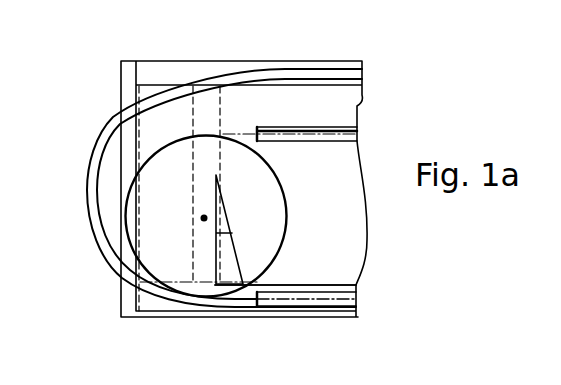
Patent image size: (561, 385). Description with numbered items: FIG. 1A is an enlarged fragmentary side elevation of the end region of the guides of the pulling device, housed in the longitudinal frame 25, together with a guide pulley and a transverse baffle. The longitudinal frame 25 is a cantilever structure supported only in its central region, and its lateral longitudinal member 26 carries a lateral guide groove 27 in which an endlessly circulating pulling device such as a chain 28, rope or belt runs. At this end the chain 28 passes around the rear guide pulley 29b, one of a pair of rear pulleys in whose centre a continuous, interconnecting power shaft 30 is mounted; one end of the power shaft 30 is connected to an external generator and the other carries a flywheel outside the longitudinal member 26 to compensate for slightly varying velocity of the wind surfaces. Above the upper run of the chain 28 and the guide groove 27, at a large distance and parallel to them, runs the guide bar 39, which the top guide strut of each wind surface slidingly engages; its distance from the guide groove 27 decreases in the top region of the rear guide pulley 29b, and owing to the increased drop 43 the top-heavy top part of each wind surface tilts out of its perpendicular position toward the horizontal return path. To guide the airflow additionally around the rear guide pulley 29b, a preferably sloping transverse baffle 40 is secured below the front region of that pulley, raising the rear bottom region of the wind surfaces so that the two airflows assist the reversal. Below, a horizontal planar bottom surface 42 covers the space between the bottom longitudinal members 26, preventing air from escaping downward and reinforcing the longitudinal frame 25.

The longitudinal frame 25 is at (202, 60).
The longitudinal member 26 is at (148, 70).
The guide groove 27 is at (272, 127).
The chain 28 is at (320, 127).
The rear guide pulley 29b is at (160, 198).
The power shaft 30 is at (196, 218).
The guide bar 39 is at (97, 152).
The transverse baffle 40 is at (232, 269).
The bottom surface 42 is at (287, 285).
The drop 43 is at (185, 84).